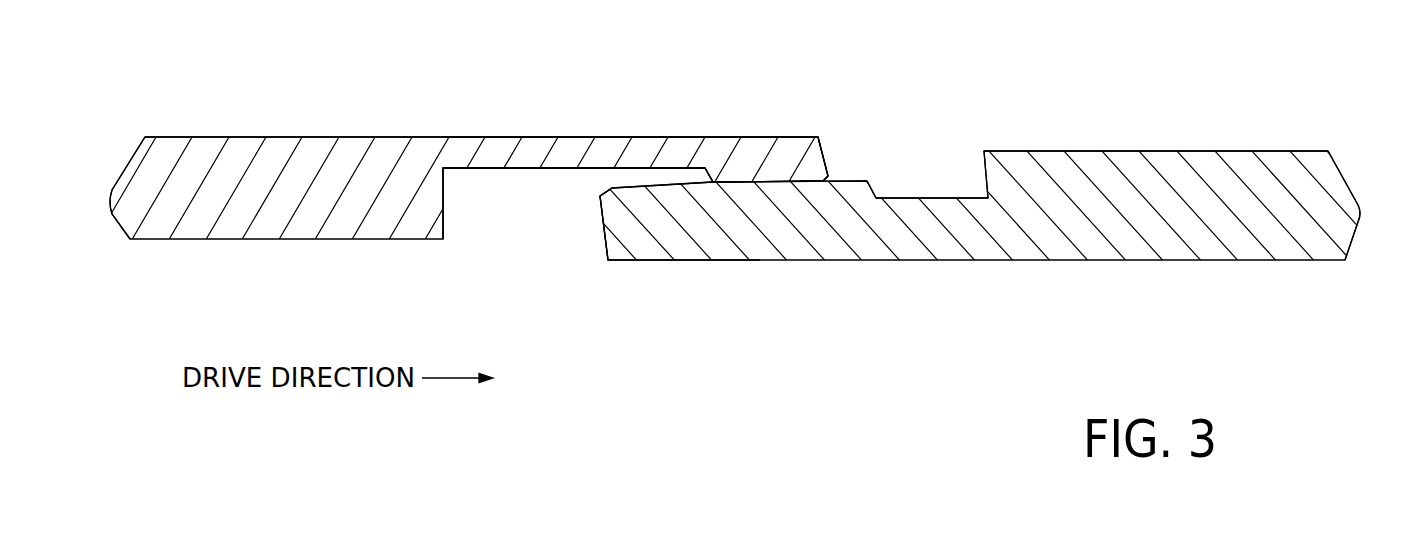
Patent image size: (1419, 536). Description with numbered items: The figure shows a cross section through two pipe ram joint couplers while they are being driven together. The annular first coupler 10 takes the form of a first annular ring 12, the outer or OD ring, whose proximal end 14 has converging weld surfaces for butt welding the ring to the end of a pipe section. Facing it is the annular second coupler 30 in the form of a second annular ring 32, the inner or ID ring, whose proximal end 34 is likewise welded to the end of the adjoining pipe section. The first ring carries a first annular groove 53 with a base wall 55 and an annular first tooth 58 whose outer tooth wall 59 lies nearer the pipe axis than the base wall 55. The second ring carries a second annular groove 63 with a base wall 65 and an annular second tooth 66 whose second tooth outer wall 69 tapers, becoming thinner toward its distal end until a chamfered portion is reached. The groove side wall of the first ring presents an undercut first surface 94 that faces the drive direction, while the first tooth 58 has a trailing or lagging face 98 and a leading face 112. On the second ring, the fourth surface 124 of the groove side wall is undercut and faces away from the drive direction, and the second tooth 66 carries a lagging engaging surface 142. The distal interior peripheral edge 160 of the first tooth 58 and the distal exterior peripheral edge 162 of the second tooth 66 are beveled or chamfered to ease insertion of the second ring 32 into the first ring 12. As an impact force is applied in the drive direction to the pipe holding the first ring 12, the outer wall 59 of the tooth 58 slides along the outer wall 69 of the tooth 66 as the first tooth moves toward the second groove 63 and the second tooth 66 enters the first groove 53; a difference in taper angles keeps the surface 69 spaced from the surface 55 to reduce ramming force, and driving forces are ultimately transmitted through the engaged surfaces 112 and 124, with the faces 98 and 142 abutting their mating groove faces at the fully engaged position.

The first coupler 10 is at (258, 94).
The first annular ring 12 is at (339, 124).
The proximal end 14 is at (94, 199).
The second coupler 30 is at (1180, 97).
The second annular ring 32 is at (1246, 136).
The proximal end 34 is at (1378, 210).
The first annular groove 53 is at (503, 212).
The base wall 55 is at (510, 170).
The first tooth 58 is at (772, 160).
The outer tooth wall 59 is at (750, 185).
The second annular groove 63 is at (925, 182).
The base wall 65 is at (930, 198).
The second tooth 66 is at (673, 232).
The second tooth outer wall 69 is at (658, 178).
The first surface 94 is at (443, 203).
The second surface 98 is at (712, 180).
The first tooth side wall groove wall engaging surface 112 is at (825, 150).
The fourth surface 124 is at (983, 168).
The second tooth side wall groove wall engaging surface 142 is at (605, 230).
The distal interior peripheral edge 160 is at (825, 175).
The distal exterior peripheral edge 162 is at (607, 190).